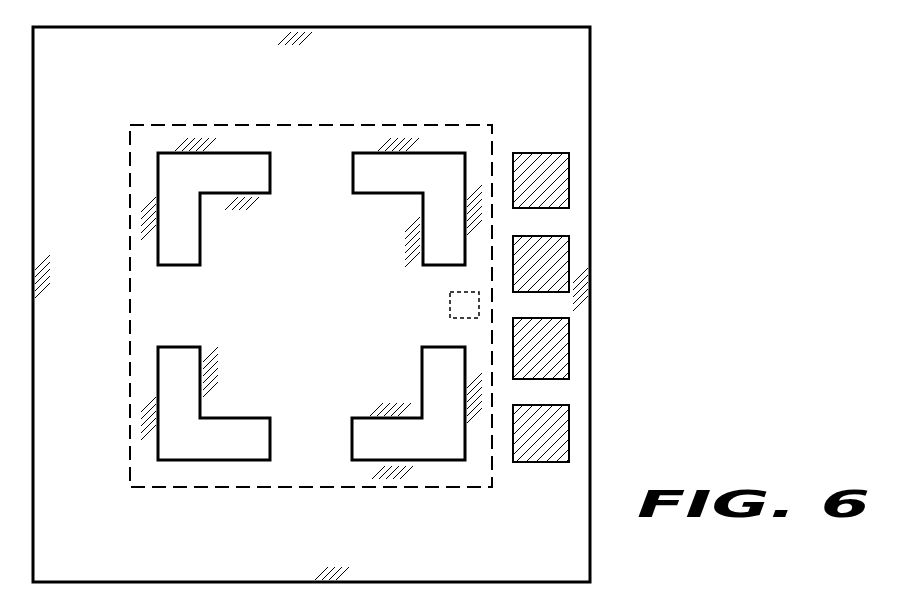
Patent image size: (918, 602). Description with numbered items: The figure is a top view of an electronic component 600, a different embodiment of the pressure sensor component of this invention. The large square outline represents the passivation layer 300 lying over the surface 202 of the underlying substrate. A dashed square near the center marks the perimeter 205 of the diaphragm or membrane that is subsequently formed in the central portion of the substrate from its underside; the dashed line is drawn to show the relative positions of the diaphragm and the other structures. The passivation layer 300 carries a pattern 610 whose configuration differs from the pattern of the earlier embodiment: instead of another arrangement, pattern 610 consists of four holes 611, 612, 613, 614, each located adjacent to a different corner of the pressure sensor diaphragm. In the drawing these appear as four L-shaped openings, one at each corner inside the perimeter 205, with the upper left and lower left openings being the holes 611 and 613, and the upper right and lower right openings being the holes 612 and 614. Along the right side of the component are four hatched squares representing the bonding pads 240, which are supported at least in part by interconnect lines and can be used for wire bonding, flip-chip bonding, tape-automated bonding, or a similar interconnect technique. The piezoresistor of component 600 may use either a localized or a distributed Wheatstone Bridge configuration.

The electronic component 600 is at (728, 457).
The passivation layer 300 is at (117, 548).
The perimeter of diaphragm 205 is at (278, 125).
The surface 202 is at (358, 155).
The pattern 610 is at (217, 343).
The hole 611 is at (196, 231).
The hole 612 is at (374, 197).
The hole 613 is at (242, 426).
The hole 614 is at (419, 375).
The bonding pads 240 is at (540, 472).